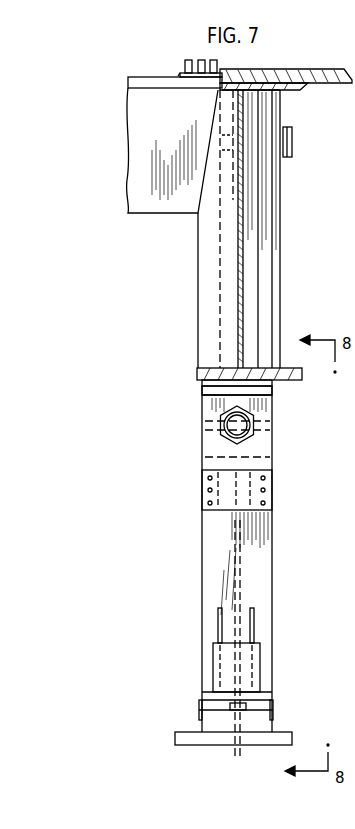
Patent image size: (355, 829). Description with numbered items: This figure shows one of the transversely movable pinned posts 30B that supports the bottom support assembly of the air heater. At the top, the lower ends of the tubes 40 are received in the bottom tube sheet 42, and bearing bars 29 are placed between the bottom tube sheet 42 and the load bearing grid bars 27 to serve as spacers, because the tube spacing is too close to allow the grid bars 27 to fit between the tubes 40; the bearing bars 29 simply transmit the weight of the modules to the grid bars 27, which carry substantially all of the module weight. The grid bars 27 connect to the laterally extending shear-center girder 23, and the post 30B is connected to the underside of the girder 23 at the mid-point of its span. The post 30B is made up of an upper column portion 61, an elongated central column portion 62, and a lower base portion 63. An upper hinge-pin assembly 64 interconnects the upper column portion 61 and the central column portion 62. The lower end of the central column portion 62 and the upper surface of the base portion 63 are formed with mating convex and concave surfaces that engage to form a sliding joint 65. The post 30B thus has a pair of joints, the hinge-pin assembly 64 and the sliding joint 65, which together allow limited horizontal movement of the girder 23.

The tubes 40 is at (201, 59).
The bottom tube sheet 42 is at (180, 76).
The bearing bars 29 is at (165, 88).
The grid bars 27 is at (152, 148).
The shear-center girder 23 is at (238, 250).
The upper column portion 61 is at (214, 399).
The upper hinge-pin assembly 64 is at (268, 427).
The post 30B is at (178, 468).
The central column portion 62 is at (258, 562).
The lower base portion 63 is at (200, 735).
The sliding joint 65 is at (255, 710).